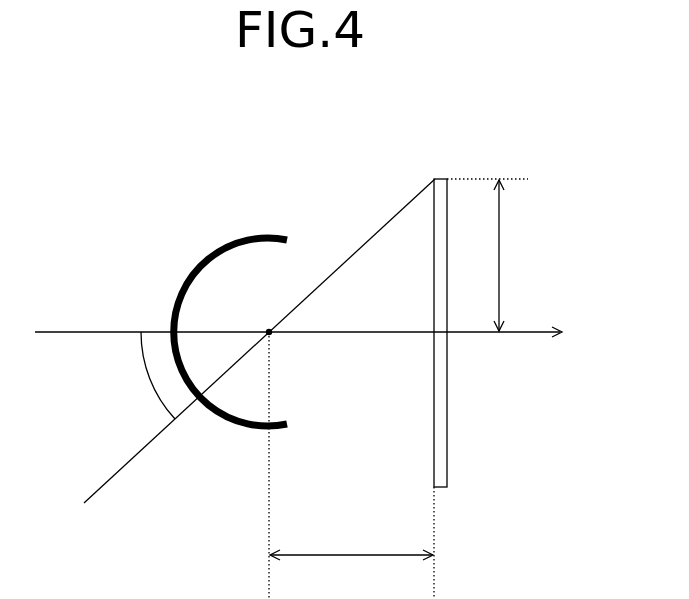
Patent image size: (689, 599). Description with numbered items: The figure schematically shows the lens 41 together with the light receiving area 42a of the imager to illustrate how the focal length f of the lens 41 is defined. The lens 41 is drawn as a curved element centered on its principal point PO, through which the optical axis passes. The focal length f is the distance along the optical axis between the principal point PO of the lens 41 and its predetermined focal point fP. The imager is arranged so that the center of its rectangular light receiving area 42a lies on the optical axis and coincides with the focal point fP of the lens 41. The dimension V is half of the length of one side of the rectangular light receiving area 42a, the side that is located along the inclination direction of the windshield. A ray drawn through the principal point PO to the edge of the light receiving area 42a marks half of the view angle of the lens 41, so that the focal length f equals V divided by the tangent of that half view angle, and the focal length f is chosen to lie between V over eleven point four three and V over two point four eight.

The lens 41 is at (272, 237).
The light receiving area 42a is at (447, 178).
The principal point PO is at (269, 332).
The focal point fP is at (434, 332).
The half of the length of one side of the rectangular light receiving area V is at (487, 255).
The focal length f is at (351, 568).